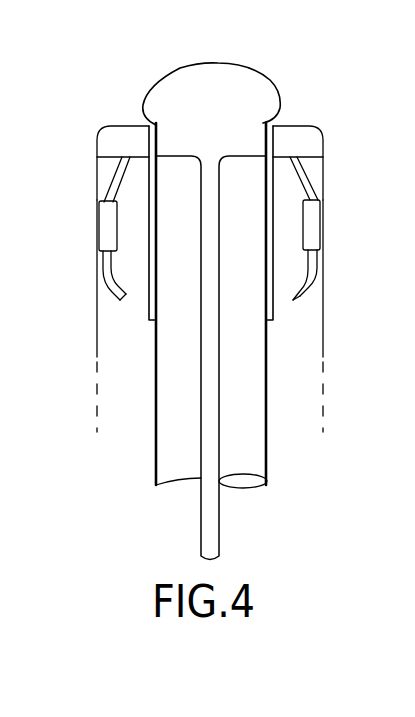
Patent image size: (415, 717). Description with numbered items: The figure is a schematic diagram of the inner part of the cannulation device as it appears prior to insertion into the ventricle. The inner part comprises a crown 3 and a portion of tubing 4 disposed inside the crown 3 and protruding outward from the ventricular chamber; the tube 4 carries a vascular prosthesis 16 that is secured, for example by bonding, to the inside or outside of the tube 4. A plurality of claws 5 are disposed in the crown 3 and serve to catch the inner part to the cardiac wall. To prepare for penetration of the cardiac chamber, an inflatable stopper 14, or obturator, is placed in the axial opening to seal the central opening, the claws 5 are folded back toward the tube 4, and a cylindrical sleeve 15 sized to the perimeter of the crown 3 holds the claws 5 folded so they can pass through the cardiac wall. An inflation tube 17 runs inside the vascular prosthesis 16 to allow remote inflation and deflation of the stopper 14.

The crown 3 is at (117, 137).
The portion of tubing 4 is at (147, 318).
The claws 5 is at (112, 290).
The stopper 14 is at (188, 88).
The sleeve 15 is at (98, 305).
The vascular prosthesis 16 is at (157, 418).
The inflation tube 17 is at (219, 533).